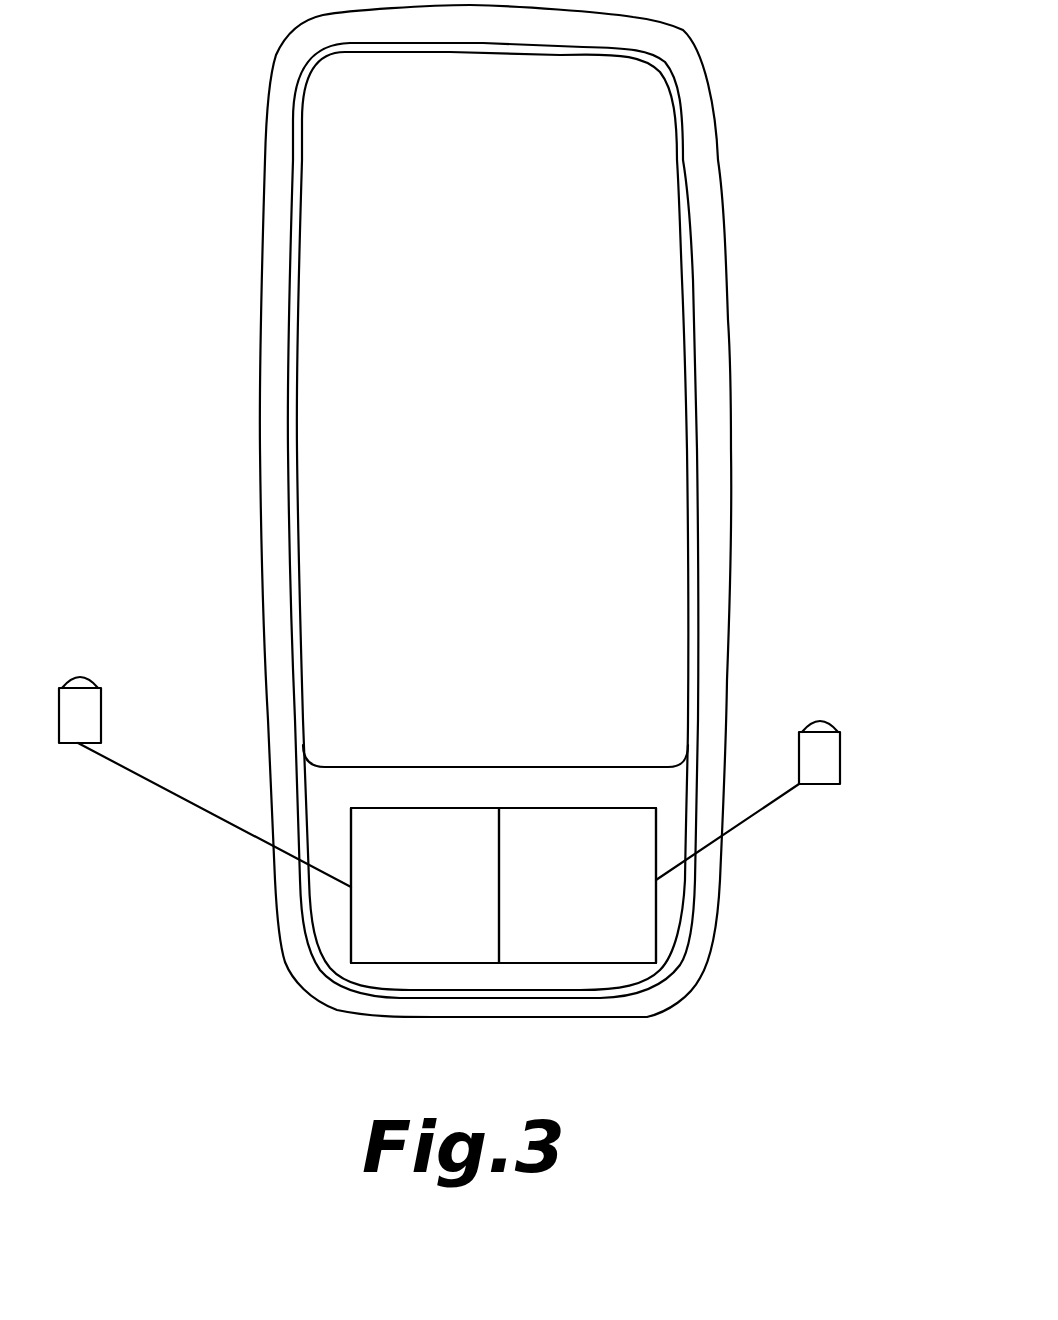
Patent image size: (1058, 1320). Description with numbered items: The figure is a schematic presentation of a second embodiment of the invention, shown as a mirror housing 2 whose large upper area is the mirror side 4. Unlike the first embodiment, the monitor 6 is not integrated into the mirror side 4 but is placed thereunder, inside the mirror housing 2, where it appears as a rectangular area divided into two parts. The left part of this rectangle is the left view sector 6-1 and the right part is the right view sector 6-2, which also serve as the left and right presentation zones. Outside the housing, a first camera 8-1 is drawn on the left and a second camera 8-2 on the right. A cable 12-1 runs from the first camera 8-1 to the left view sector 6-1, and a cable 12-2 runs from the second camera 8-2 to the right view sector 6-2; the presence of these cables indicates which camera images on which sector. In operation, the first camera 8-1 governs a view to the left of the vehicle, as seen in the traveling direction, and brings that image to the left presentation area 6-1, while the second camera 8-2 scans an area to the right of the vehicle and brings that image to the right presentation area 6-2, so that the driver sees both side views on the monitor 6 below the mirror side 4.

The mirror housing 2 is at (694, 287).
The mirror side 4 is at (509, 394).
The monitor 6 is at (422, 963).
The left view sector 6-1 is at (451, 896).
The right view sector 6-2 is at (601, 894).
The first camera 8-1 is at (101, 717).
The second camera 8-2 is at (840, 753).
The cable 12-1 is at (213, 815).
The cable 12-2 is at (778, 803).